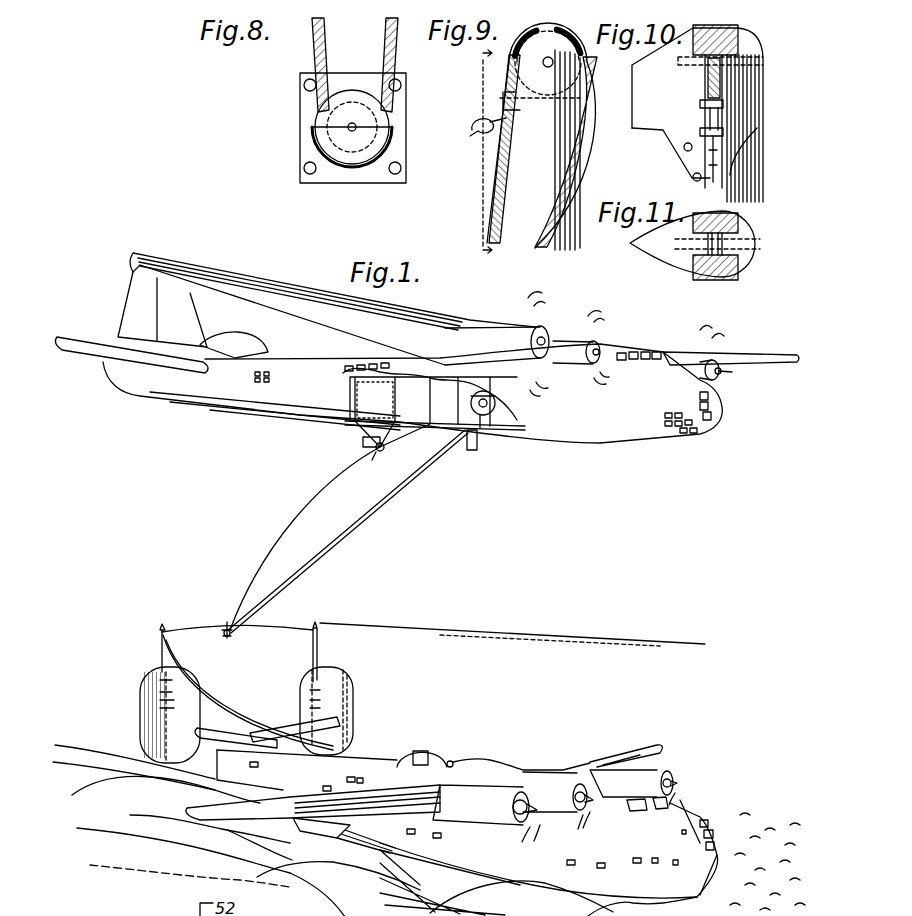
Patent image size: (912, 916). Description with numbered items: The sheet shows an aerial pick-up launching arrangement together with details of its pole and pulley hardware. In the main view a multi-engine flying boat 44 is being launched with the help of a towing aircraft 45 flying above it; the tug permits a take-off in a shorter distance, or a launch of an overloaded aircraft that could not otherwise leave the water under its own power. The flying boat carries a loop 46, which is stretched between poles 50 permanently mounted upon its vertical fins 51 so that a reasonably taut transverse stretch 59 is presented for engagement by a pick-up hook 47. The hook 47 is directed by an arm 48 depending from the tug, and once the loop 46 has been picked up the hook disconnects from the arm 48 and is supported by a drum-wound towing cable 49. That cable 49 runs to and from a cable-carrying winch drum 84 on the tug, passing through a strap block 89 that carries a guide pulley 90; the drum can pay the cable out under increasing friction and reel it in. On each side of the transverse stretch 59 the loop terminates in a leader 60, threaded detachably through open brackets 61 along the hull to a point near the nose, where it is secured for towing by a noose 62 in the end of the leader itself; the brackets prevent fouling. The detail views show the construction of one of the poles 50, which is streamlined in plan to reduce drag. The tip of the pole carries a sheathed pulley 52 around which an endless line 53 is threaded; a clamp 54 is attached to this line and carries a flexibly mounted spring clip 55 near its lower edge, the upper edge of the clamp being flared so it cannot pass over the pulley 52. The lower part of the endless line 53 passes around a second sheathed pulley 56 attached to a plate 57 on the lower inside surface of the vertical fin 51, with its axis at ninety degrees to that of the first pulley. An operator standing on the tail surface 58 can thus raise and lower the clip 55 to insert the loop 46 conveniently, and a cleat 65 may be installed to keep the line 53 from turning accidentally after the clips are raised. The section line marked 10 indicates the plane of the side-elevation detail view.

In FIG. 9, the section line 10- 10 is at (499, 158).
In FIG. 1, the flying boat 44 is at (453, 759).
In FIG. 1, the towing aircraft 45 is at (270, 276).
In FIG. 1, the loop 46 is at (243, 712).
In FIG. 1, the hook 47 is at (227, 639).
In FIG. 1, the arm 48 is at (378, 508).
In FIG. 1, the towing cable 49 is at (322, 484).
In FIG. 9, the poles 50 is at (522, 178).
In FIG. 10, the poles 50 is at (745, 180).
In FIG. 11, the poles 50 is at (665, 253).
In FIG. 1, the poles 50 is at (162, 657).
In FIG. 1, the vertical fins 51 is at (366, 714).
In FIG. 9, the sheathed pulleys 52 is at (514, 118).
In FIG. 10, the sheathed pulleys 52 is at (724, 82).
In FIG. 11, the sheathed pulleys 52 is at (725, 240).
In FIG. 8, the endless line 53 is at (312, 45).
In FIG. 9, the endless line 53 is at (580, 162).
In FIG. 10, the endless line 53 is at (722, 72).
In FIG. 11, the endless line 53 is at (725, 249).
In FIG. 1, the endless line 53 is at (376, 662).
In FIG. 9, the clamp 54 is at (507, 100).
In FIG. 10, the clamp 54 is at (700, 104).
In FIG. 9, the spring clip 55 is at (478, 135).
In FIG. 10, the spring clip 55 is at (708, 148).
In FIG. 8, the second sheathed pulley 56 is at (356, 92).
In FIG. 1, the second sheathed pulley 56 is at (174, 702).
In FIG. 8, the plate 57 is at (305, 128).
In FIG. 1, the plate 57 is at (142, 722).
In FIG. 1, the tail surface 58 is at (296, 715).
In FIG. 1, the transverse stretch 59 is at (215, 628).
In FIG. 1, the leader 60 is at (410, 750).
In FIG. 1, the open brackets 61 is at (445, 760).
In FIG. 1, the noose 62 is at (717, 855).
In FIG. 1, the cleat 65 is at (160, 686).
In FIG. 1, the winch drum 84 is at (497, 432).
In FIG. 1, the strap block 89 is at (376, 456).
In FIG. 1, the guide pulley 90 is at (382, 450).